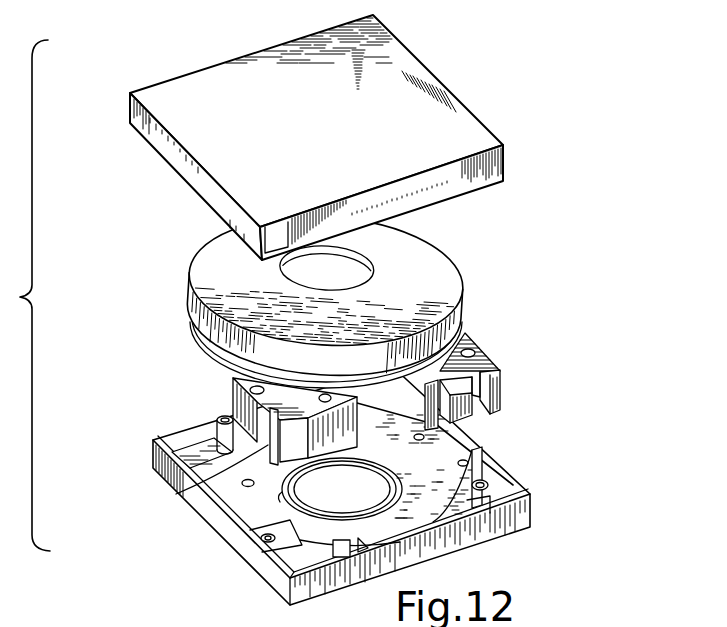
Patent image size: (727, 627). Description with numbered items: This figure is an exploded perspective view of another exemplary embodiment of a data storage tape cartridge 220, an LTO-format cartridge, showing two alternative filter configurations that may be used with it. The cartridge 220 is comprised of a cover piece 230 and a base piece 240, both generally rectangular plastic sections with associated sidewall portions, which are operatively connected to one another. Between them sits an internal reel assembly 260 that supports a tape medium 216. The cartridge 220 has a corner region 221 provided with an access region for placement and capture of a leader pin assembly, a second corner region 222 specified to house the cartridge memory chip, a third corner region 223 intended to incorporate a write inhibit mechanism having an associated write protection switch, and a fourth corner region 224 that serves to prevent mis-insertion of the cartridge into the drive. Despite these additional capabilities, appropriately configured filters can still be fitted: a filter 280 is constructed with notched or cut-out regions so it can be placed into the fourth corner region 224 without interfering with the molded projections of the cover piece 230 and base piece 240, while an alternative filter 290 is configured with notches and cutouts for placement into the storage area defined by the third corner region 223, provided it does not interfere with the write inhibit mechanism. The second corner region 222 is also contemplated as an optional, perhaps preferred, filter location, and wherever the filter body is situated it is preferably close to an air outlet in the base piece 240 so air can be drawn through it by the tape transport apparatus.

The cover piece 230 is at (463, 137).
The data storage tape cartridge 220 is at (545, 243).
The tape medium 216 is at (427, 327).
The second corner region 222 is at (413, 375).
The filter 290 is at (506, 393).
The internal reel assembly 260 is at (176, 296).
The corner region 221 is at (200, 447).
The third corner region 223 is at (492, 490).
The filter 280 is at (256, 449).
The fourth corner region 224 is at (293, 547).
The base piece 240 is at (500, 537).